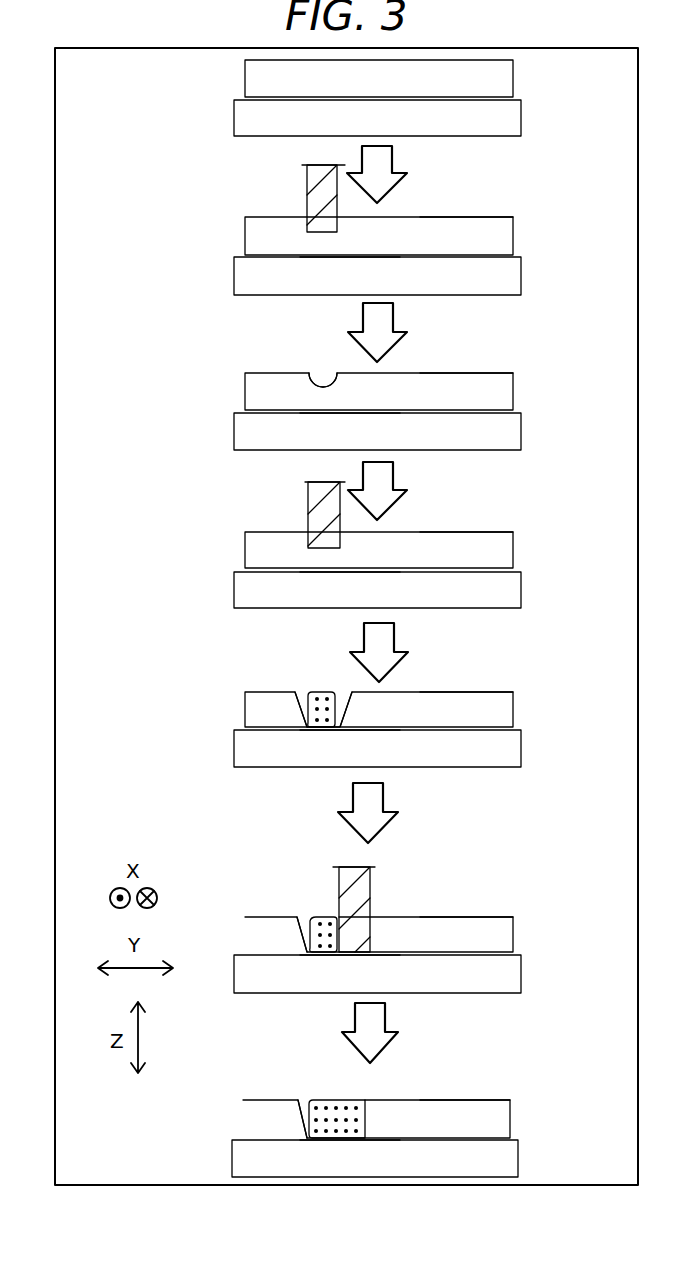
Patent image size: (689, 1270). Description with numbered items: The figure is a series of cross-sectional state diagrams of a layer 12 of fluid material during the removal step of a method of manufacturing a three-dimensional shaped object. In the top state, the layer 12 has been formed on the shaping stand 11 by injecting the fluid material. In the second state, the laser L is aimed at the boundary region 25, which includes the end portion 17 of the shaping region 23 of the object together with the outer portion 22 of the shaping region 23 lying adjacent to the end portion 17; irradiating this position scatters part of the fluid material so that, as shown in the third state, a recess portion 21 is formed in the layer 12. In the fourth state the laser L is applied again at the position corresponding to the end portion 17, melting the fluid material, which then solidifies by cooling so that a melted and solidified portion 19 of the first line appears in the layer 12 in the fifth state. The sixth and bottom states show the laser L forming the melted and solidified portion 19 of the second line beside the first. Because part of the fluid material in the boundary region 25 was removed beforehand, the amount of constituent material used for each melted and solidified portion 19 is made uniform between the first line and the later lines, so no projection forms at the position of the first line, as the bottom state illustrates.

The shaping stand 11 is at (248, 113).
The layer 12 is at (255, 68).
The end portion 17 is at (337, 217).
The melted and solidified portion 19 is at (333, 733).
The recess portion 21 is at (317, 372).
The outer portion 22 is at (303, 217).
The shaping region 23 is at (442, 227).
The boundary region 25 is at (353, 270).
The laser L is at (307, 193).